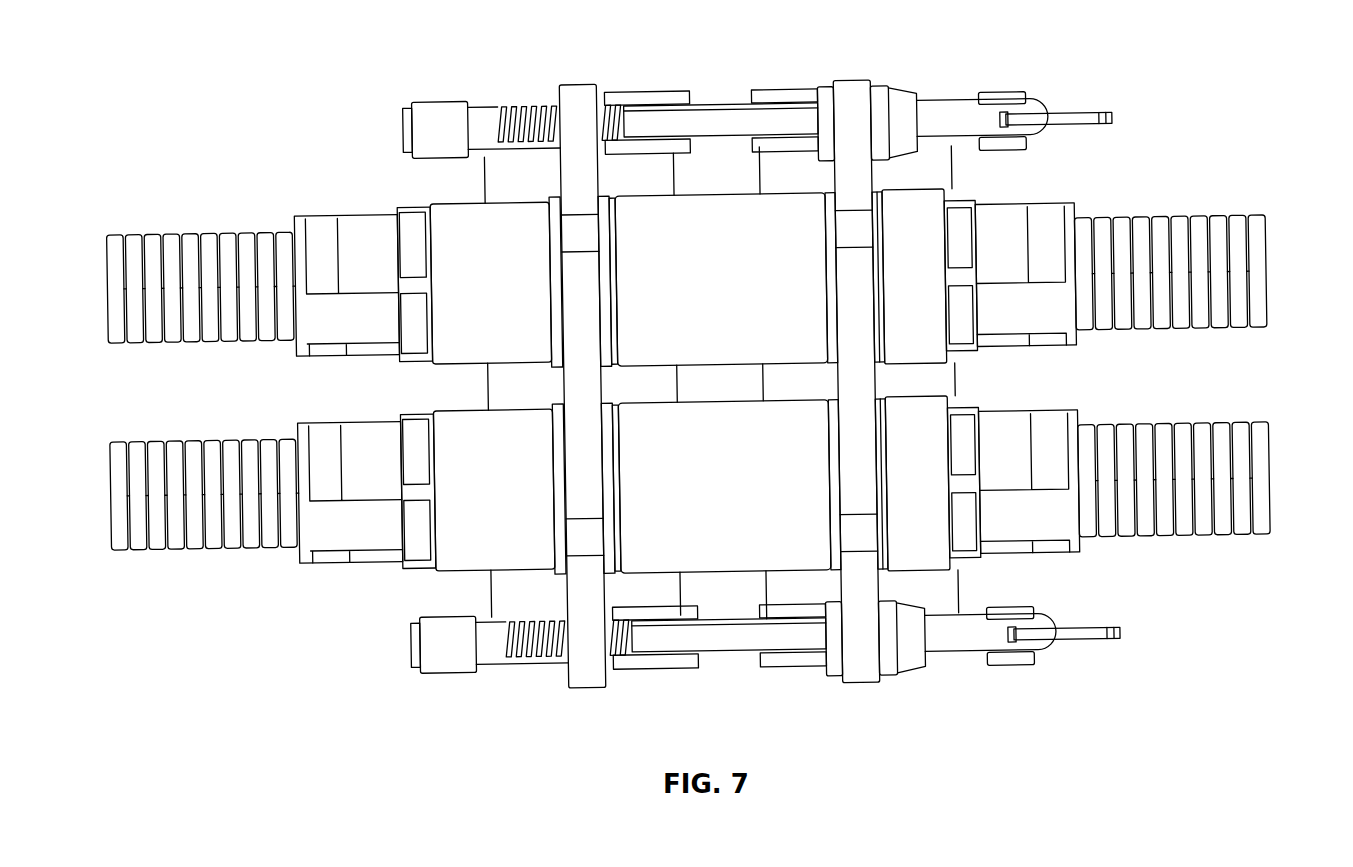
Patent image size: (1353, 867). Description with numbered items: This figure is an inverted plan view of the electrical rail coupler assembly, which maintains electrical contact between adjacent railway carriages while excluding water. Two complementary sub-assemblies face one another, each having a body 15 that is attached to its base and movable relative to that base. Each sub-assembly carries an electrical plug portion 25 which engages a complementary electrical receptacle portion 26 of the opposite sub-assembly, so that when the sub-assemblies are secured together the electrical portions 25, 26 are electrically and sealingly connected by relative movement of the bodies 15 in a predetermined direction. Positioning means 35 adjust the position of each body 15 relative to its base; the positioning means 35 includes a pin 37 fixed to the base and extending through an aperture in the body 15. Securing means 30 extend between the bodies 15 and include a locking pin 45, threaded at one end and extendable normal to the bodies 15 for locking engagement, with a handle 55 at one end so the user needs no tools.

The body 15 is at (582, 98).
The electrical plug portion 25 is at (1205, 217).
The electrical receptacle portion 26 is at (243, 232).
The securing means 30 is at (1027, 2).
The positioning means 35 is at (440, 115).
The pin 37 is at (482, 118).
The locking pin 45 is at (725, 118).
The handle 55 is at (1067, 112).